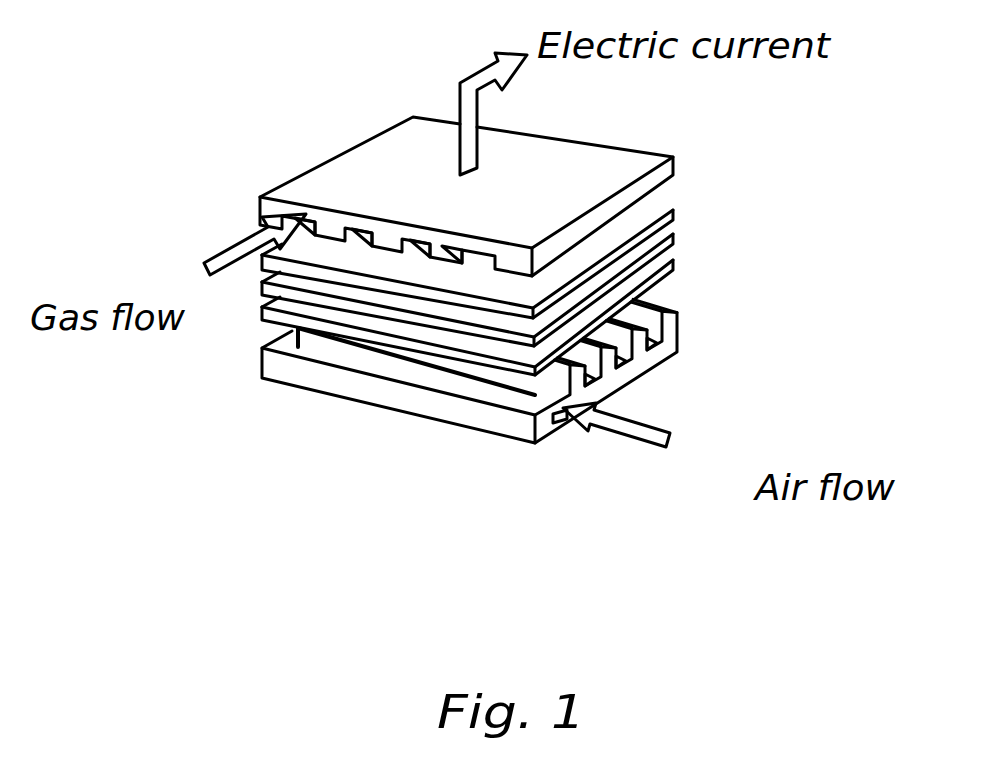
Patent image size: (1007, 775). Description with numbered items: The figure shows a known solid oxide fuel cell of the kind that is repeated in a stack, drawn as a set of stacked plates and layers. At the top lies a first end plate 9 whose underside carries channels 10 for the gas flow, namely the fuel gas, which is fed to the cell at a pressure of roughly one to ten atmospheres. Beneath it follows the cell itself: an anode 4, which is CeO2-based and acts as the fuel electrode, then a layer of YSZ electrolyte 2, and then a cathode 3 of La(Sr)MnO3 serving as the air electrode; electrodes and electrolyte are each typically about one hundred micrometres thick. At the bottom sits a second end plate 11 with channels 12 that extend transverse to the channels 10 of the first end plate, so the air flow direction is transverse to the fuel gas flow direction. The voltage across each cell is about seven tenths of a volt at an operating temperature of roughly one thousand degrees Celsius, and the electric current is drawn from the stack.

The first end plate 9 is at (643, 160).
The anode 4 is at (648, 212).
The electrolyte 2 is at (660, 236).
The cathode 3 is at (665, 262).
The second end plate 11 is at (618, 369).
The channels 10 is at (258, 221).
The channels 12 is at (566, 420).